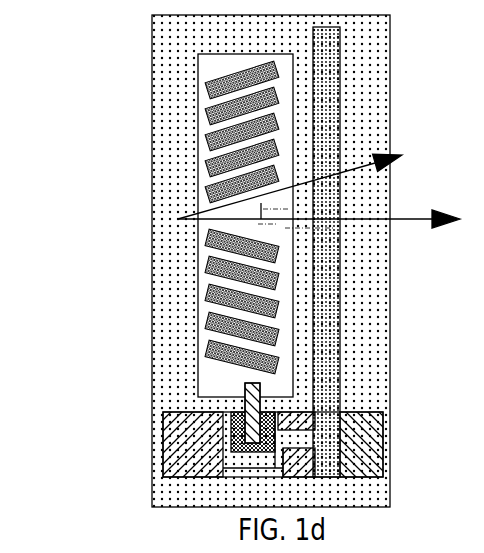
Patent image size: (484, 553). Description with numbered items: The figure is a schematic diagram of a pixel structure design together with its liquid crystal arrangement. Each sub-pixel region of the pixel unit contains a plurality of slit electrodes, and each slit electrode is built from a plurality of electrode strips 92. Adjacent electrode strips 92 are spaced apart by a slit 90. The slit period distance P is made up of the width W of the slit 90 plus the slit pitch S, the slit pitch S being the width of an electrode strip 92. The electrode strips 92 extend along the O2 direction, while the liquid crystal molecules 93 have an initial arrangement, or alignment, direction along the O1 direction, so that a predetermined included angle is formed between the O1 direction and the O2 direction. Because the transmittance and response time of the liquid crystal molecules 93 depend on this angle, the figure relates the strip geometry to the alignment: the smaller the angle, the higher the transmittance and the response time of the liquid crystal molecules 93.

The slit 90 is at (325, 225).
The electrode strip 92 is at (328, 209).
The liquid crystal molecules 93 is at (383, 252).
The O1 direction O1 is at (319, 235).
The O2 direction O2 is at (302, 186).
The slit period distance P is at (110, 142).
The width of the slit W is at (155, 94).
The slit pitch S is at (155, 127).